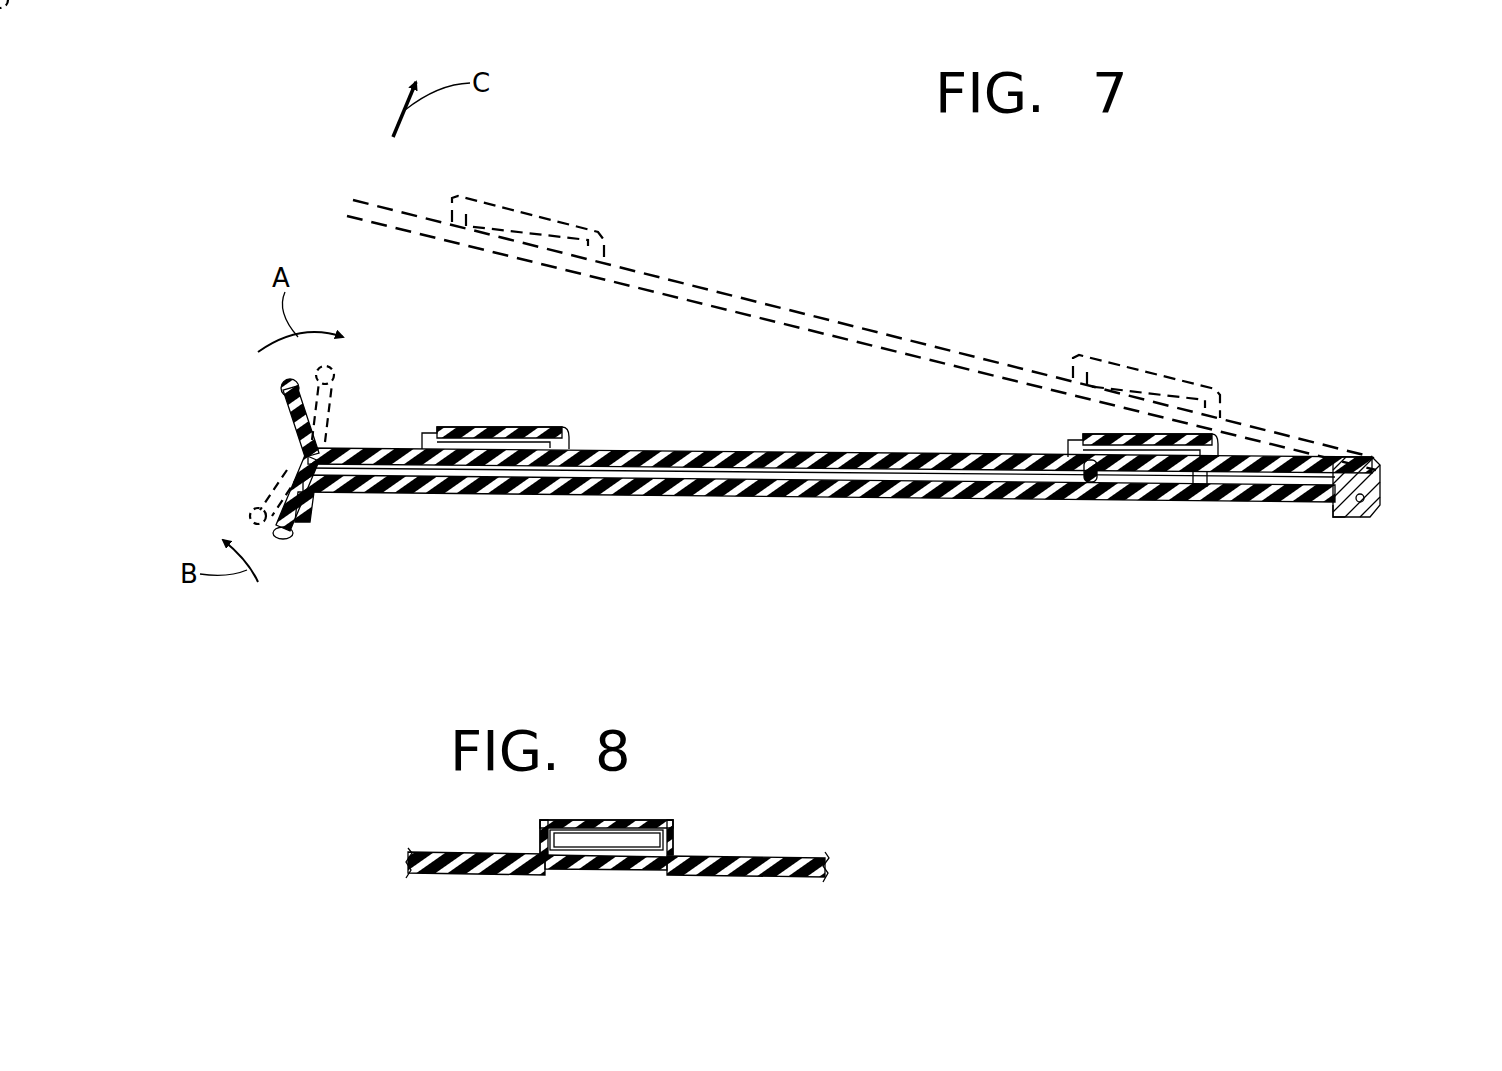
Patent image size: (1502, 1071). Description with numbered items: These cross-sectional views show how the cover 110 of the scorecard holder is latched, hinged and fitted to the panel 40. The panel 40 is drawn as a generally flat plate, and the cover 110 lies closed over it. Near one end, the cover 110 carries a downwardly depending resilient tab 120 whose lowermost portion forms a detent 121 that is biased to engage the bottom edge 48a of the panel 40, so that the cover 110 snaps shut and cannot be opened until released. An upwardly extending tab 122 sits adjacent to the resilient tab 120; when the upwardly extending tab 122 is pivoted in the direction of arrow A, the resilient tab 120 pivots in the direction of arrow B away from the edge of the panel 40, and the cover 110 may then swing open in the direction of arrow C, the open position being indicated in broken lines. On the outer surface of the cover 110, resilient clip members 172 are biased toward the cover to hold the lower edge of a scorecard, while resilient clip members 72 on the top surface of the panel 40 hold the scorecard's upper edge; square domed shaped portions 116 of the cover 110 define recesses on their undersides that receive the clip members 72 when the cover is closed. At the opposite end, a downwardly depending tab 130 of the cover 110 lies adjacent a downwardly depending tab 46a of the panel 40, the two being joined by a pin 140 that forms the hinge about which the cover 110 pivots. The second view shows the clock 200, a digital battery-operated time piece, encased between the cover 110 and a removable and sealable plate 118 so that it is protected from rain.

In FIG. 7, the cover 110 is at (890, 326).
In FIG. 8, the cover 110 is at (804, 850).
In FIG. 7, the panel 40 is at (741, 498).
In FIG. 7, the bottom edge 48a is at (306, 526).
In FIG. 7, the downwardly depending resilient tab 120 is at (272, 493).
In FIG. 7, the detent 121 is at (291, 543).
In FIG. 7, the upwardly extending tab 122 is at (338, 393).
In FIG. 7, the resilient clip members 172 is at (516, 427).
In FIG. 7, the square domed shaped portions 116 is at (1158, 378).
In FIG. 7, the resilient clip members 72 is at (1130, 486).
In FIG. 7, the downwardly depending tabs 130 is at (1387, 479).
In FIG. 7, the pin 140 is at (1363, 502).
In FIG. 7, the downwardly depending tabs 46a is at (1333, 519).
In FIG. 8, the removable and sealable plate 118 is at (604, 874).
In FIG. 8, the clock 200 is at (650, 838).